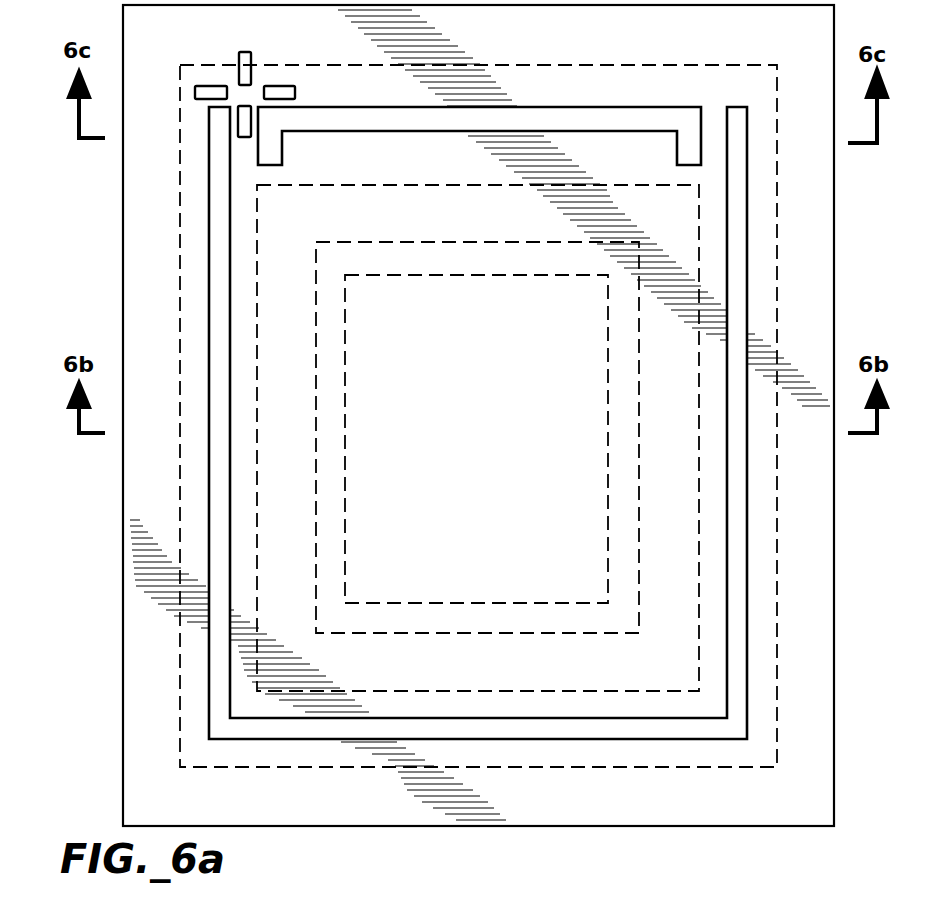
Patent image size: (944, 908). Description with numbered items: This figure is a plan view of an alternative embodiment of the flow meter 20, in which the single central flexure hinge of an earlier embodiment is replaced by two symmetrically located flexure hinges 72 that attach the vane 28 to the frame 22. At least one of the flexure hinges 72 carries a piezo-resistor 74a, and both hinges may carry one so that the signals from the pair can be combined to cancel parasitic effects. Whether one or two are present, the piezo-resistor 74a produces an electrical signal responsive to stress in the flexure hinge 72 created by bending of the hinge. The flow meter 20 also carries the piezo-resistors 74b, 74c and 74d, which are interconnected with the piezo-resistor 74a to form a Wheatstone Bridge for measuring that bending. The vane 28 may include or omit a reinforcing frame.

The flow meter 20 is at (93, 234).
The frame 22 is at (122, 326).
The vane 28 is at (492, 428).
The flexure hinge 72 is at (246, 148).
The piezo-resistor 74a is at (238, 123).
The piezo-resistor 74b is at (208, 85).
The piezo-resistor 74c is at (252, 62).
The piezo-resistor 74d is at (277, 85).